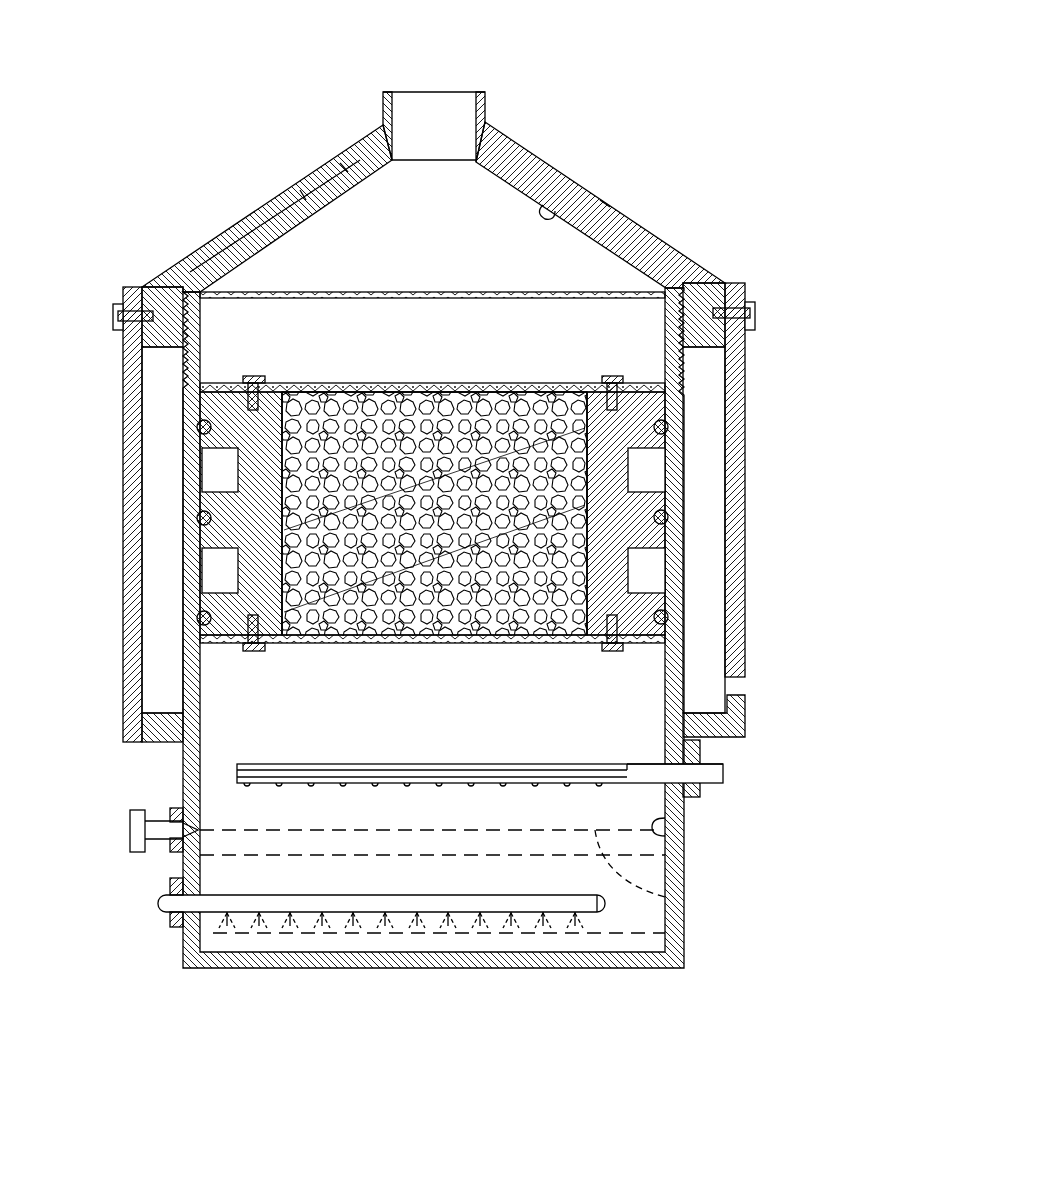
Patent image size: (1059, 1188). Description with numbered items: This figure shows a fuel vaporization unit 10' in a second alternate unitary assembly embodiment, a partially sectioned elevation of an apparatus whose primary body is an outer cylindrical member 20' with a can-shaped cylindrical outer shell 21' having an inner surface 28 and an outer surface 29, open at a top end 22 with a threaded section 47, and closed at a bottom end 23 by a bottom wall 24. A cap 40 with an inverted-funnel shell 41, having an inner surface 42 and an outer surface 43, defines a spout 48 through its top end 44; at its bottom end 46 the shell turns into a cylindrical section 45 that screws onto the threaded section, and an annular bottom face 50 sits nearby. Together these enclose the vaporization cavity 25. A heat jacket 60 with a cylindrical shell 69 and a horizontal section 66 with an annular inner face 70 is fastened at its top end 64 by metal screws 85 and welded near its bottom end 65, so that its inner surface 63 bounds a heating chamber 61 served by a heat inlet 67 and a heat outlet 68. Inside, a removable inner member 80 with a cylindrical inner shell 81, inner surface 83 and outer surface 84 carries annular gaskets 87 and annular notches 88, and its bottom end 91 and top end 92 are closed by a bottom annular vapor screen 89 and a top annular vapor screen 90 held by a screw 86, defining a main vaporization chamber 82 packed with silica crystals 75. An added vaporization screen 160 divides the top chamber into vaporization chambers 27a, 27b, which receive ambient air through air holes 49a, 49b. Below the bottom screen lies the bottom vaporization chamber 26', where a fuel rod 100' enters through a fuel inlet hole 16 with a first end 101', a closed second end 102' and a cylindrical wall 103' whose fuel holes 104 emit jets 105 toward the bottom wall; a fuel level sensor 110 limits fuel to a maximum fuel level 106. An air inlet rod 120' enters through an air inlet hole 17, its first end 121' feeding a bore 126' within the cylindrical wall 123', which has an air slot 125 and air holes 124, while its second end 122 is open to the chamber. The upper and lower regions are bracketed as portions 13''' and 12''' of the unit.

The ore processing apparatus 10' is at (477, 551).
The cap 40 is at (532, 130).
The top end 44 is at (485, 107).
The spout 48 is at (440, 125).
The vaporization chamber 27a is at (380, 260).
The vaporization chamber 27b is at (323, 327).
The air hole 49a is at (343, 175).
The air hole 49b is at (300, 205).
The shell 41 is at (547, 175).
The inner surface 42 is at (562, 212).
The outer surface 43 is at (628, 218).
The upper reactor section 13''' is at (477, 623).
The heat jacket 60 is at (123, 500).
The cylindrical shell 69 is at (730, 500).
The bottom end 46 is at (712, 352).
The annular bottom face 50 is at (745, 365).
The inner surface 63 is at (715, 530).
The heating chamber 61 is at (175, 416).
The bottom end 65 is at (745, 703).
The heat inlet 67 is at (742, 687).
The heat outlet 68 is at (137, 382).
The metal screws 85 is at (118, 312).
The top end 64 is at (755, 306).
The cylindrical section 45 is at (745, 298).
The threaded section 47 is at (700, 290).
The top end 22 is at (672, 290).
The annular inner face 70 is at (670, 723).
The vaporization screen 160 is at (432, 292).
The inner member 80 is at (352, 383).
The bottom annular vapor screen 89 is at (508, 643).
The outer surface 84 is at (213, 393).
The top end 92 is at (633, 386).
The annular notches 88 is at (222, 470).
The annular gaskets 87 is at (200, 427).
The screw 86 is at (258, 655).
The bottom end 91 is at (590, 643).
The silica crystals 75 is at (528, 460).
The main vaporization chamber 82 is at (410, 440).
The inner surface 83 is at (294, 392).
The top annular vapor screen 90 is at (442, 392).
The cylindrical inner shell 81 is at (577, 392).
The lower reactor section 12''' is at (486, 858).
The outer cylindrical member 20' is at (520, 857).
The horizontal section 66 is at (737, 742).
The cylindrical wall 123' is at (539, 776).
The air holes 124 is at (470, 788).
The air slot 125 is at (335, 785).
The first end 121' is at (720, 789).
The air inlet rod 120' is at (778, 769).
The air inlet hole 17 is at (660, 760).
The inner surface 28 is at (668, 827).
The outer surface 29 is at (685, 852).
The cylindrical outer shell 21' is at (480, 871).
The maximum fuel level 106 is at (672, 898).
The bottom end 23 is at (685, 942).
The bottom wall 24 is at (523, 957).
The fuel hole 104 is at (255, 897).
The first end 101' is at (124, 902).
The second end 102' is at (628, 952).
The fuel rod 100' is at (137, 961).
The fuel inlet hole 16 is at (205, 892).
The cylindrical wall 103' is at (401, 958).
The jet 105 is at (283, 932).
The fuel level sensor 110 is at (130, 830).
The bore 126' is at (154, 784).
The second end 122 is at (232, 772).
The vaporization cavity 25 is at (242, 723).
The bottom vaporization chamber 26' is at (211, 696).